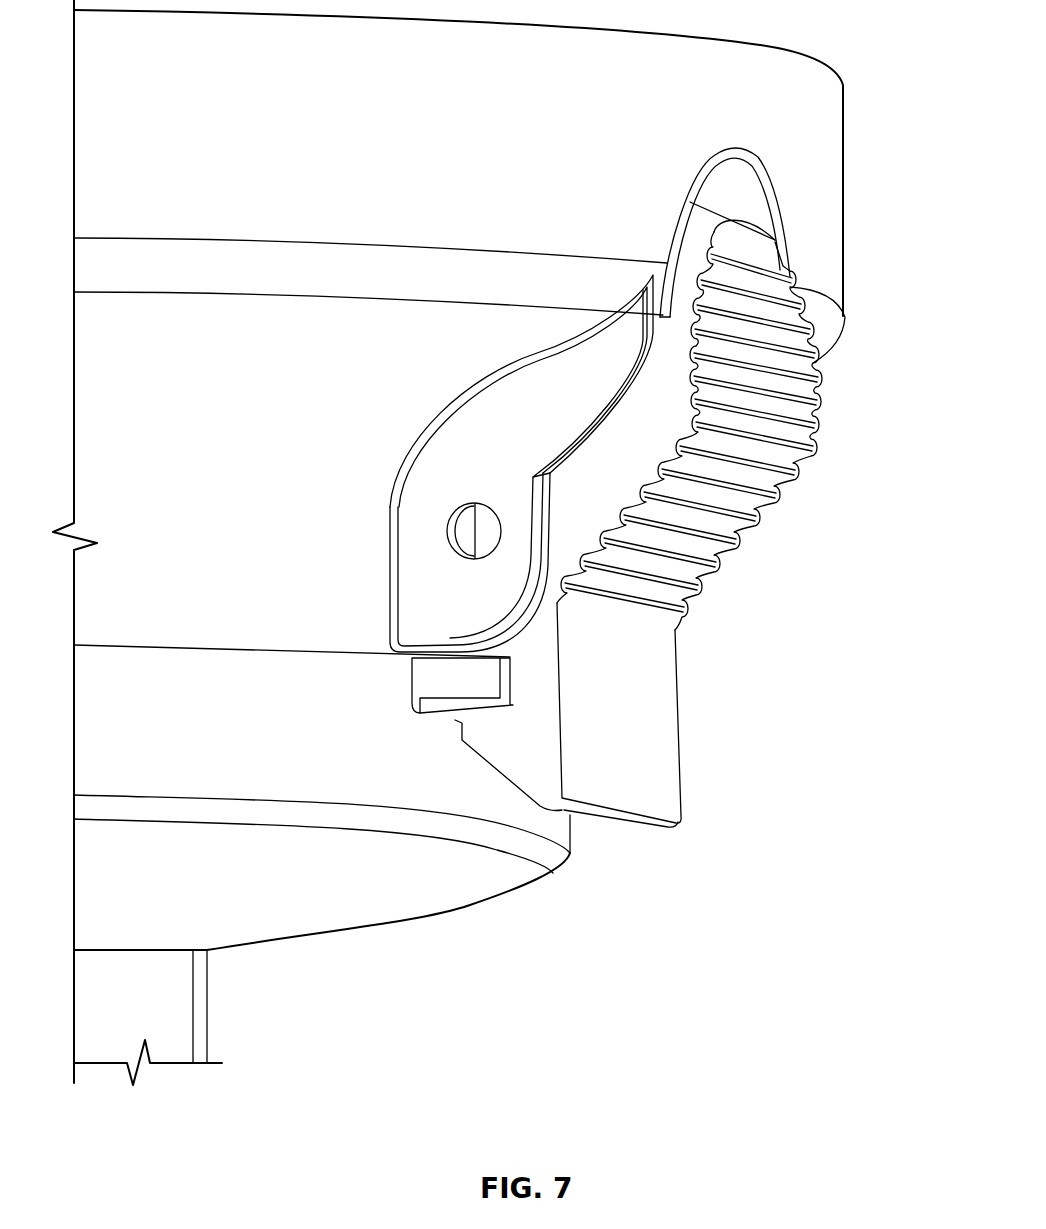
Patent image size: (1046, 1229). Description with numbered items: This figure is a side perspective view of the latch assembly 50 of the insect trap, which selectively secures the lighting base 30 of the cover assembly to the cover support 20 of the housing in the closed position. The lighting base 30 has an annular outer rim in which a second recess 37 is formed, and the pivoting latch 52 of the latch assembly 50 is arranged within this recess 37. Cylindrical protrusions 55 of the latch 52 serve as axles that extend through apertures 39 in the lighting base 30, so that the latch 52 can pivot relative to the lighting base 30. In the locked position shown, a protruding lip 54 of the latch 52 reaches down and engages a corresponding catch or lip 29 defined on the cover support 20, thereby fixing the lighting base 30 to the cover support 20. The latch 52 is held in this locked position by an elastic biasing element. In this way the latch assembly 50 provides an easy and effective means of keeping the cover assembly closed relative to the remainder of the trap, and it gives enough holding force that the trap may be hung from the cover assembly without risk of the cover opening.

The lighting base 30 is at (808, 121).
The second recess 37 is at (752, 194).
The latch assembly 50 is at (870, 383).
The apertures 39 is at (482, 530).
The cylindrical protrusions 55 is at (482, 538).
The cover support 20 is at (598, 666).
The catch or lip 29 is at (468, 685).
The pivoting latch 52 is at (643, 720).
The protruding lip 54 is at (537, 768).